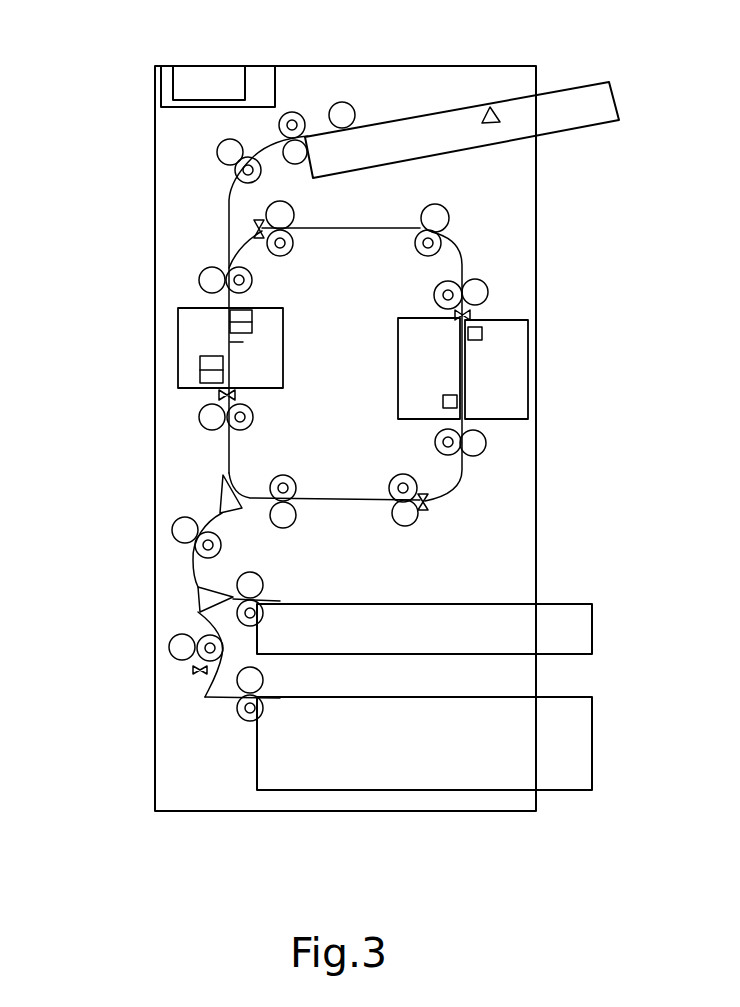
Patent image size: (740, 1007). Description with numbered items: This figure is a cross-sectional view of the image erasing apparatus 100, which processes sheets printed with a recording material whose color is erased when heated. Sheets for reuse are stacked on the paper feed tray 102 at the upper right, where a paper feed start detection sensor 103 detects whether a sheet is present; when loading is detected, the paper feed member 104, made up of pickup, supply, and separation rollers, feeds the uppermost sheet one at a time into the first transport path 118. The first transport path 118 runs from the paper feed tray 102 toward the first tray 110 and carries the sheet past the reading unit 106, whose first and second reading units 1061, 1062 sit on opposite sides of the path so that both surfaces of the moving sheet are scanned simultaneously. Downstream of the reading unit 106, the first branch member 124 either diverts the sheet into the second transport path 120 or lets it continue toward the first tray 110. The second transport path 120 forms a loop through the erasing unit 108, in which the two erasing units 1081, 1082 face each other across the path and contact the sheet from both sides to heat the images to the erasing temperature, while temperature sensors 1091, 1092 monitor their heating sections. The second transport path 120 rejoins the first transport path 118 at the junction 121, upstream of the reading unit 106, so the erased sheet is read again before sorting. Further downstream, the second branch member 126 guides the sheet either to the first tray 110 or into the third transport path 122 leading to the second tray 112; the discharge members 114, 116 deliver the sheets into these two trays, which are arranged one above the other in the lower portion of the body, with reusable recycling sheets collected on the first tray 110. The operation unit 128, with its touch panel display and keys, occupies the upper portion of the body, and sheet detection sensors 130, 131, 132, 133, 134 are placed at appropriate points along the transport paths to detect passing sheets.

The image erasing apparatus 100 is at (101, 61).
The paper feed tray 102 is at (576, 88).
The paper feed start detection sensor 103 is at (491, 107).
The paper feed member 104 is at (296, 110).
The reading unit 106 is at (223, 342).
The first reading unit 1061 is at (207, 369).
The second reading unit 1062 is at (224, 325).
The erasing unit 108 is at (505, 349).
The erasing unit 1081 is at (450, 357).
The erasing unit 1082 is at (518, 374).
The temperature sensor 1091 is at (442, 401).
The temperature sensor 1092 is at (482, 328).
The first tray 110 is at (593, 629).
The second tray 112 is at (593, 735).
The discharge member 114 is at (268, 595).
The discharge member 116 is at (240, 708).
The first transport path 118 is at (220, 183).
The second transport path 120 is at (356, 500).
The junction 121 is at (228, 262).
The third transport path 122 is at (195, 624).
The first branch member 124 is at (222, 478).
The second branch member 126 is at (200, 600).
The operation unit 128 is at (172, 66).
The sheet detection sensor 130 is at (219, 395).
The sheet detection sensor 131 is at (425, 505).
The sheet detection sensor 132 is at (468, 315).
The sheet detection sensor 133 is at (259, 224).
The sheet detection sensor 134 is at (198, 670).